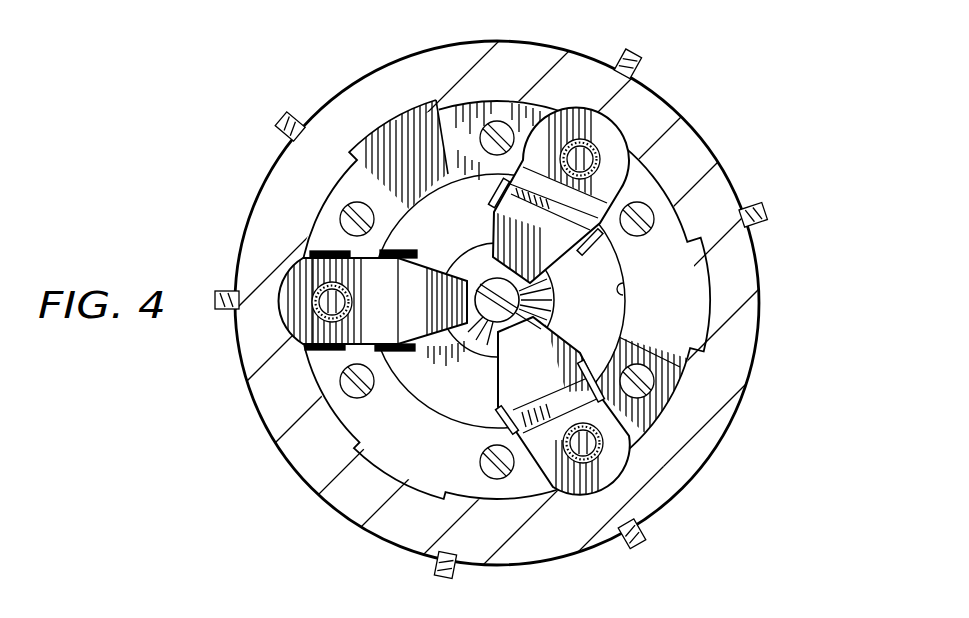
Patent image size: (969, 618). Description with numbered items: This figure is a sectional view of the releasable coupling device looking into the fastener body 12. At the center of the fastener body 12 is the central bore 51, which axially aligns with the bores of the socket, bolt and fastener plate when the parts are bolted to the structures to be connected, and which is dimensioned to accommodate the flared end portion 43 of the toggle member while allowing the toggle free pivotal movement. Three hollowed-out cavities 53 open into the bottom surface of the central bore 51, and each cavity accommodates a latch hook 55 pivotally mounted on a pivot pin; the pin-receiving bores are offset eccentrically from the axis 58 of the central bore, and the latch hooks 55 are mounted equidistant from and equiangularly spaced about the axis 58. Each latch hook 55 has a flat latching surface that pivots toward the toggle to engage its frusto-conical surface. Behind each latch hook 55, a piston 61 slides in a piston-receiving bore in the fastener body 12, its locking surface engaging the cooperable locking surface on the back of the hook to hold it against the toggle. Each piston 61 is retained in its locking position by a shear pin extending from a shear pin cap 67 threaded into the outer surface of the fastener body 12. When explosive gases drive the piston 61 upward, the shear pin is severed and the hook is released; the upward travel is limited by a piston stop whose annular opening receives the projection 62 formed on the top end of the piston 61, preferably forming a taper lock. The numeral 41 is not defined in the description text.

The fastener body 12 is at (761, 307).
The central screw 41 is at (545, 306).
The flared end portion 43 is at (479, 238).
The central bore 51 is at (630, 290).
The hollowed-out cavities 53 is at (596, 232).
The latch hook 55 is at (430, 296).
The axis of the central body bore 58 is at (500, 326).
The piston 61 is at (300, 266).
The projection 62 is at (324, 308).
The shear pin cap 67 is at (638, 46).